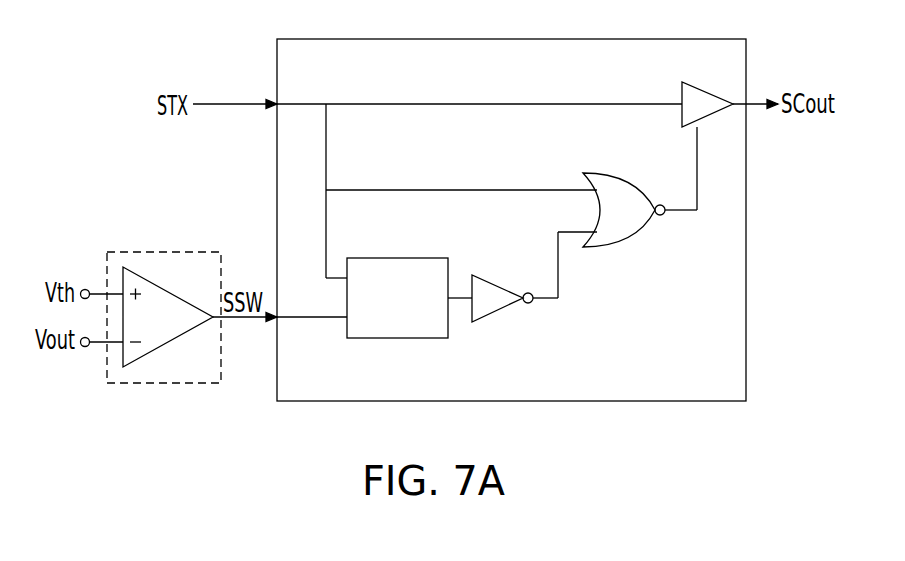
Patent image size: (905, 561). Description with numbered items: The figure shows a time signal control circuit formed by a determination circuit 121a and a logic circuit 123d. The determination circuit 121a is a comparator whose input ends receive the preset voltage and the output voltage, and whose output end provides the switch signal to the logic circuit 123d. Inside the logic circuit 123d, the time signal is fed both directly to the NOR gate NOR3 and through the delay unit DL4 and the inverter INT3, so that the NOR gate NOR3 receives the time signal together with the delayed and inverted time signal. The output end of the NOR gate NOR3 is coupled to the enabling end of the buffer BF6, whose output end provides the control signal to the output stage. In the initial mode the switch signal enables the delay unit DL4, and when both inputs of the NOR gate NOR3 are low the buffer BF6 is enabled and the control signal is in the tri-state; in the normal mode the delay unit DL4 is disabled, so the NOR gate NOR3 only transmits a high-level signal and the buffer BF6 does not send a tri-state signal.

The logic circuit 123d is at (545, 39).
The determination circuit 121a is at (155, 251).
The delay unit DL4 is at (397, 338).
The inverter INT3 is at (497, 320).
The NOR gate NOR3 is at (620, 247).
The buffer BF6 is at (703, 118).